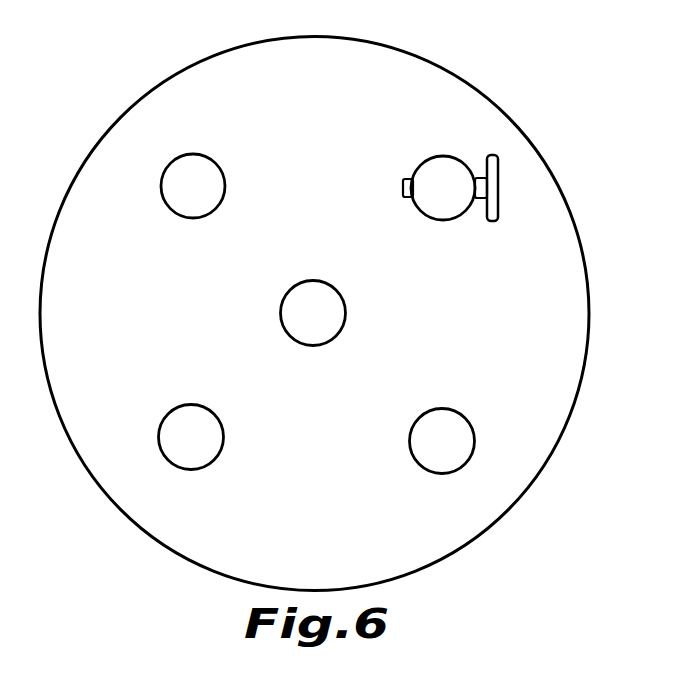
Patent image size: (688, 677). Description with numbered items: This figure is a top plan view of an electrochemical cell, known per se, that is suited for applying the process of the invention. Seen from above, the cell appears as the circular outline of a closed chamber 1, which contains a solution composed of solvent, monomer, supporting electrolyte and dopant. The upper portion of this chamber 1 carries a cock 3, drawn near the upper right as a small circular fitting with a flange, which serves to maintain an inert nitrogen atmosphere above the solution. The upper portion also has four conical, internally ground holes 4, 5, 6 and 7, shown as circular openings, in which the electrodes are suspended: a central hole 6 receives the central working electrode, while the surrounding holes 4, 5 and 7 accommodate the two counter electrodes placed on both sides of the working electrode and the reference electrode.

The closed chamber 1 is at (588, 327).
The cock 3 is at (486, 162).
The conical internally ground hole 4 is at (218, 163).
The conical internally ground hole 5 is at (427, 472).
The conical internally ground hole 6 is at (346, 312).
The conical internally ground hole 7 is at (212, 463).